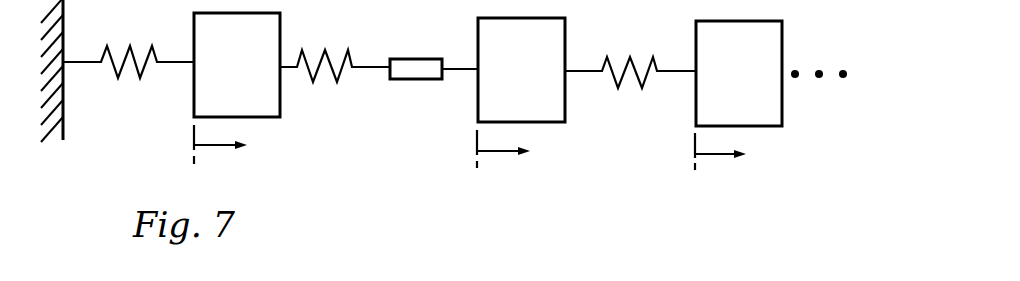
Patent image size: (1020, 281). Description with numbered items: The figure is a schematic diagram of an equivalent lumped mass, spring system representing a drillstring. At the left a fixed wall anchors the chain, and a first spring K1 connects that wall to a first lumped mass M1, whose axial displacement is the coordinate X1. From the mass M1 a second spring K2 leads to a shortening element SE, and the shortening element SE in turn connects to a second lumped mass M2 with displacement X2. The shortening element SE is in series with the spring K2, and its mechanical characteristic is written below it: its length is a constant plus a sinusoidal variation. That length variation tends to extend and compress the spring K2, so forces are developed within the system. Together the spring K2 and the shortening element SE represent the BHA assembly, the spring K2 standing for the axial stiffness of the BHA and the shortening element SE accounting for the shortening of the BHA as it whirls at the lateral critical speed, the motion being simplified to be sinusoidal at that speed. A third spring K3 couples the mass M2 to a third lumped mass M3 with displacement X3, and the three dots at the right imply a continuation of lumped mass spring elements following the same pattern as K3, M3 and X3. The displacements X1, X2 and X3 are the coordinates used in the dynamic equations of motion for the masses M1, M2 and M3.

The fixed wall / ground wall is at (52, 71).
The spring K1 is at (128, 78).
The lumped mass M1 is at (237, 65).
The displacement X1 is at (233, 144).
The spring K2 is at (335, 83).
The shortening element SE is at (398, 87).
The lumped mass M2 is at (521, 70).
The displacement X2 is at (518, 149).
The spring K3 is at (630, 87).
The lumped mass M3 is at (739, 73).
The displacement X3 is at (735, 151).